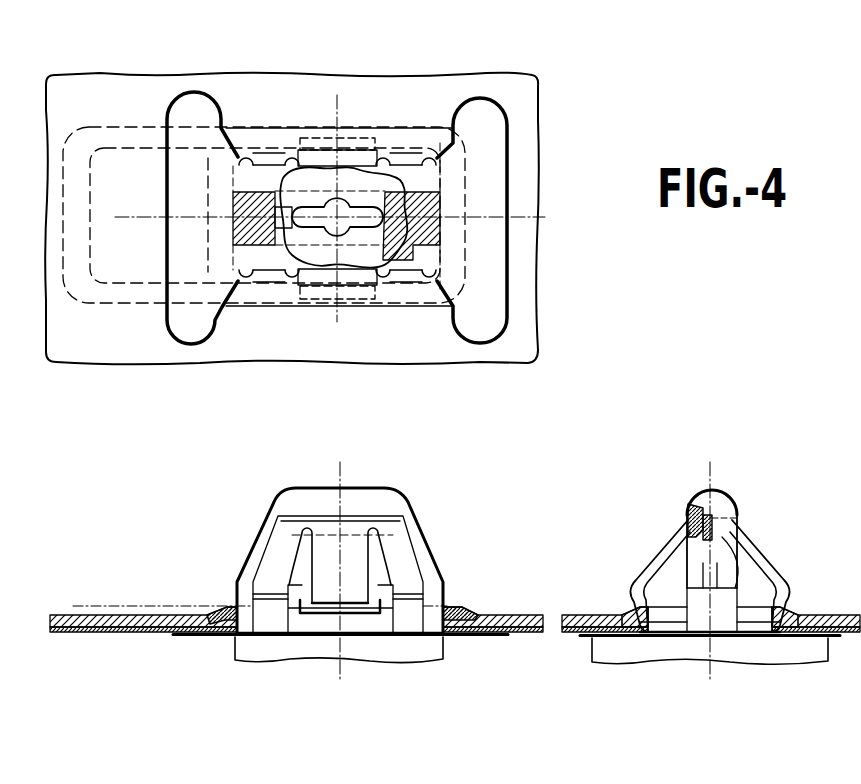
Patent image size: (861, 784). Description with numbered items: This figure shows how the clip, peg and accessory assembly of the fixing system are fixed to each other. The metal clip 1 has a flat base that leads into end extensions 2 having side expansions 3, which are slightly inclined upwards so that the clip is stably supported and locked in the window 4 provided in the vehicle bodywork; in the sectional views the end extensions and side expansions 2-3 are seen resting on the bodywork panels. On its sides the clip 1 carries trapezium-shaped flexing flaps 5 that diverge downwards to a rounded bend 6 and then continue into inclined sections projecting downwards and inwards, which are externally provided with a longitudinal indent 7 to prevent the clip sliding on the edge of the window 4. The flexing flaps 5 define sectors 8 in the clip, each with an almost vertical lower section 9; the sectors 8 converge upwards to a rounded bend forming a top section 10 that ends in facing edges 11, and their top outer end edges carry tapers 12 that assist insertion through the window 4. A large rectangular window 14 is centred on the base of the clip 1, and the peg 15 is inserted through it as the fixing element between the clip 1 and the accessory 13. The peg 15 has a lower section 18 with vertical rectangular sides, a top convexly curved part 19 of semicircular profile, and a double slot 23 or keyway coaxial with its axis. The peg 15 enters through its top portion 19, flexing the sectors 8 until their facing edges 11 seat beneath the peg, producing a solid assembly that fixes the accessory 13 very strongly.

The metal clip 1 is at (358, 272).
The end extensions 2 is at (187, 270).
The side expansions 3 is at (197, 105).
The window 4 is at (243, 178).
The flexing flaps 5 is at (349, 137).
The rounded bend 6 is at (628, 588).
The longitudinal indent 7 is at (793, 597).
The sectors 8 is at (267, 284).
The lower section 9 is at (407, 630).
The top section 10 is at (685, 510).
The facing edges 11 is at (700, 505).
The tapers 12 is at (270, 503).
The accessory 13 is at (386, 198).
The rectangular window 14 is at (440, 228).
The peg 15 is at (438, 192).
The lower section 18 is at (233, 605).
The top convexly curved part 19 is at (368, 510).
The double slot 23 is at (343, 225).
The panel stack 2-3 is at (193, 640).